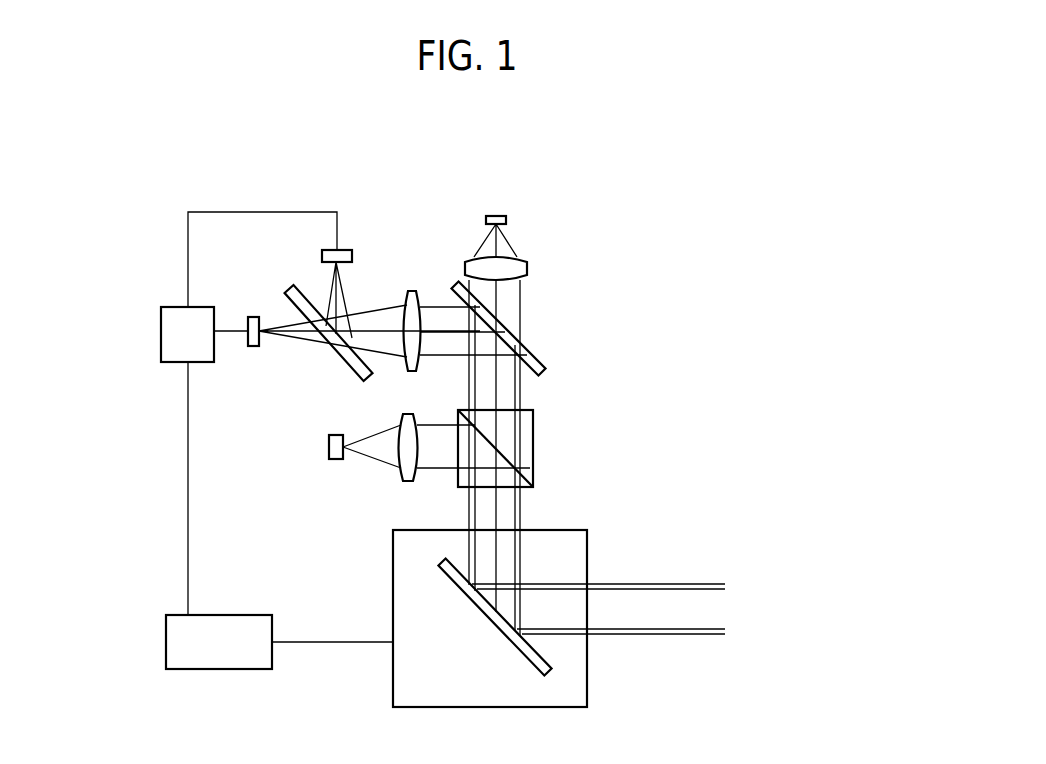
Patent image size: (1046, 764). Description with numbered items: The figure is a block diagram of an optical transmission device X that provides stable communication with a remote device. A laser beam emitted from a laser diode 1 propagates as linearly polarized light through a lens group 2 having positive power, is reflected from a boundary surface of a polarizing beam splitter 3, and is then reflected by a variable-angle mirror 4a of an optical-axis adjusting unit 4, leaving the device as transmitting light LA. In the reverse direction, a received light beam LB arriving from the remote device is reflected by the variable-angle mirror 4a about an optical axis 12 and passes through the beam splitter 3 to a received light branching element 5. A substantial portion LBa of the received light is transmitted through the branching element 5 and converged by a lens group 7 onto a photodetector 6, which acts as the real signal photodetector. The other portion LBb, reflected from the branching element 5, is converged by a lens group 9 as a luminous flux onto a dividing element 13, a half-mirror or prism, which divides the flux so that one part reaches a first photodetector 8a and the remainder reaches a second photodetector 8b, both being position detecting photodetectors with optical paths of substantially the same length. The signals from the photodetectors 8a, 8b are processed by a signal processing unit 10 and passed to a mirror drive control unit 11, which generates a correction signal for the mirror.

The laser diode 1 is at (335, 460).
The lens group 2 is at (412, 425).
The polarizing beam splitter 3 is at (533, 418).
The optical-axis adjusting unit 4 is at (450, 707).
The variable-angle mirror 4a is at (538, 657).
The received light branching element 5 is at (513, 337).
The photodetector 6 is at (495, 214).
The lens group 7 is at (528, 272).
The first photodetector 8a is at (254, 348).
The second photodetector 8b is at (348, 250).
The lens group 9 is at (407, 291).
The signal processing unit 10 is at (172, 306).
The mirror drive control unit 11 is at (204, 670).
The optical axis 12 is at (495, 553).
The dividing element 13 is at (296, 288).
The optical transmission device X is at (678, 308).
The transmitting light LA is at (730, 589).
The received light beam LB is at (780, 584).
The substantial portion of received light beam LBa is at (498, 305).
The other portion of received light beam LBb is at (442, 330).